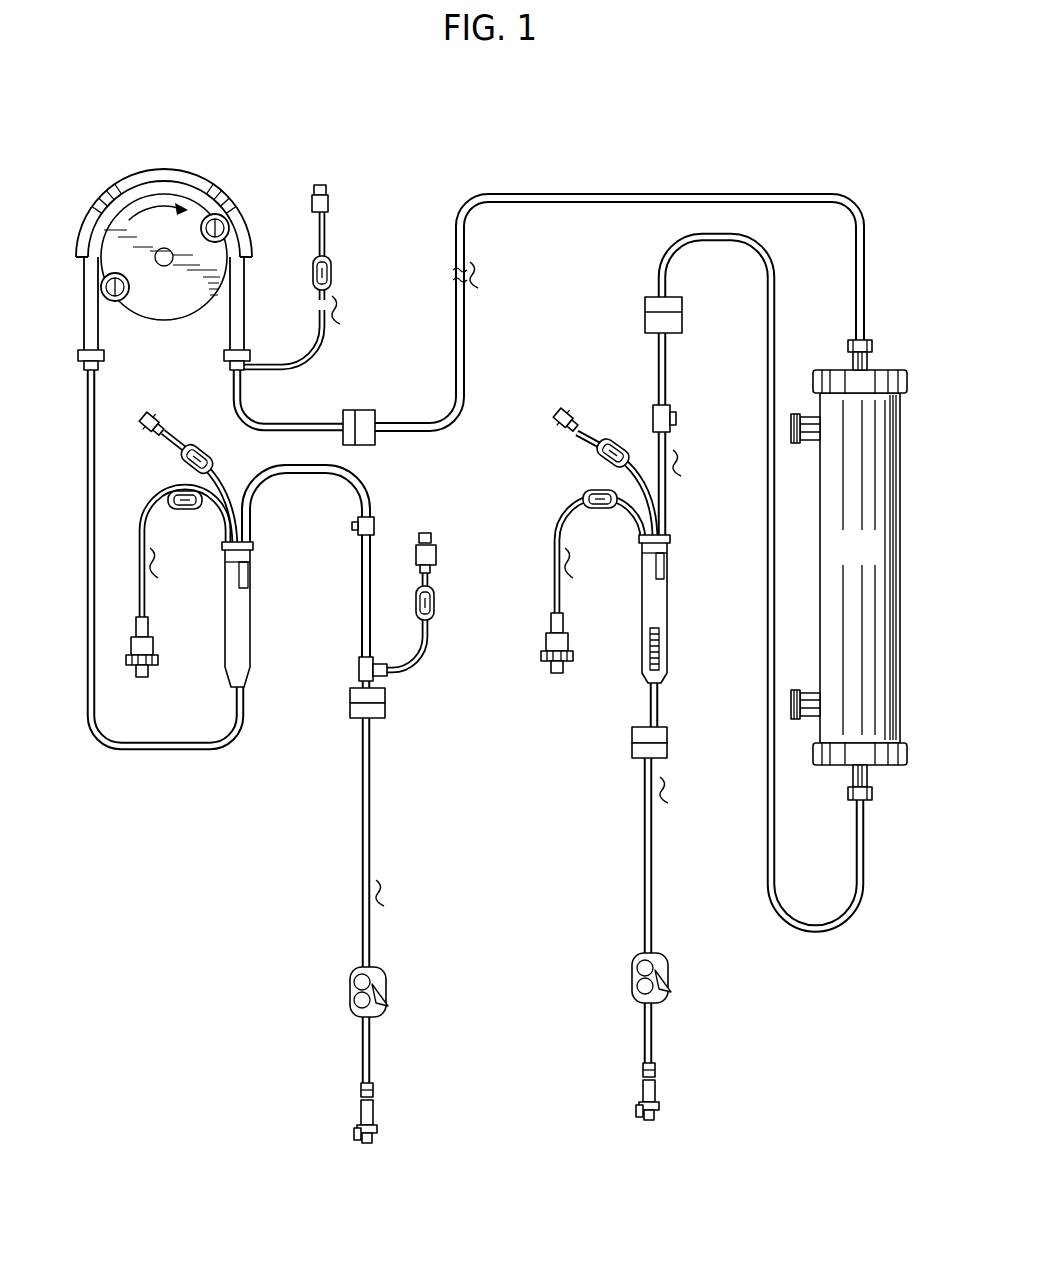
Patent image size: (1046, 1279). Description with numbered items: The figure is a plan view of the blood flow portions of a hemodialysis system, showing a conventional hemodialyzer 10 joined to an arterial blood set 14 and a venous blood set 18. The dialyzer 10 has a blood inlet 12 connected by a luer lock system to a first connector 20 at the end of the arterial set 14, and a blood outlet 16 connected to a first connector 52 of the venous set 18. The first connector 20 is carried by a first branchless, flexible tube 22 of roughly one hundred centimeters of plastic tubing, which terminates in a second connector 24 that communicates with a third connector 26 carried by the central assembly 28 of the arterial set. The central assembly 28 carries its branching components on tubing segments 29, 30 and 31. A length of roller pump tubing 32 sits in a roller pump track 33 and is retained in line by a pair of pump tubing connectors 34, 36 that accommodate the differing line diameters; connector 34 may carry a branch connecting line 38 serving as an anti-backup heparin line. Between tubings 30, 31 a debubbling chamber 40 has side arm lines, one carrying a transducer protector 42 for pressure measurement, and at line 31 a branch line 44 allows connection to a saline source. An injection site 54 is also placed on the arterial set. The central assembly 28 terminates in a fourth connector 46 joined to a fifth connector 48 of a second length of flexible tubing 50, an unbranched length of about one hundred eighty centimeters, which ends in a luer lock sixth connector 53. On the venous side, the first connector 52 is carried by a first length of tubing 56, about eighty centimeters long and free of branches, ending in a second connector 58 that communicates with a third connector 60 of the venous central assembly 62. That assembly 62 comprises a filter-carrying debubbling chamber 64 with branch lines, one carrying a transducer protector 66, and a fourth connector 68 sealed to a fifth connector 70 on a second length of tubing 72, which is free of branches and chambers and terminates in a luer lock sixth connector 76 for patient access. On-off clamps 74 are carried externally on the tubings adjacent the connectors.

The hemodialyzer 10 is at (843, 557).
The blood inlet 12 is at (875, 362).
The arterial blood set 14 is at (547, 190).
The blood outlet 16 is at (873, 772).
The venous blood set 18 is at (797, 940).
The first connector 20 is at (871, 345).
The first branchless, flexible tube 22 is at (670, 192).
The second connector 24 is at (372, 410).
The third connector 26 is at (355, 410).
The central assembly 28 is at (82, 573).
The tubing segment 29 is at (284, 416).
The tubing segment 30 is at (87, 472).
The tubing segment 31 is at (362, 588).
The roller pump tubing 32 is at (200, 182).
The roller pump track 33 is at (124, 176).
The pump tubing connector 34 is at (224, 366).
The pump tubing connector 36 is at (80, 357).
The branch connecting line 38 is at (331, 288).
The debubbling chamber 40 is at (252, 640).
The transducer protector 42 is at (148, 655).
The branch line 44 is at (428, 648).
The fourth connector 46 is at (386, 696).
The fifth connector 48 is at (387, 713).
The second length of flexible tubing 50 is at (372, 862).
The first connector 52 is at (870, 800).
The sixth connector 53 is at (374, 1127).
The injection site 54 is at (376, 526).
The first length of tubing 56 is at (768, 831).
The second connector 58 is at (656, 284).
The third connector 60 is at (644, 313).
The central assembly 62 is at (674, 514).
The filter-carrying debubbling chamber 64 is at (668, 605).
The transducer protector 66 is at (568, 674).
The fourth connector 68 is at (668, 733).
The fifth connector 70 is at (668, 752).
The second length of tubing 72 is at (644, 925).
The on-off clamps 74 is at (386, 995).
The sixth connector 76 is at (660, 1128).